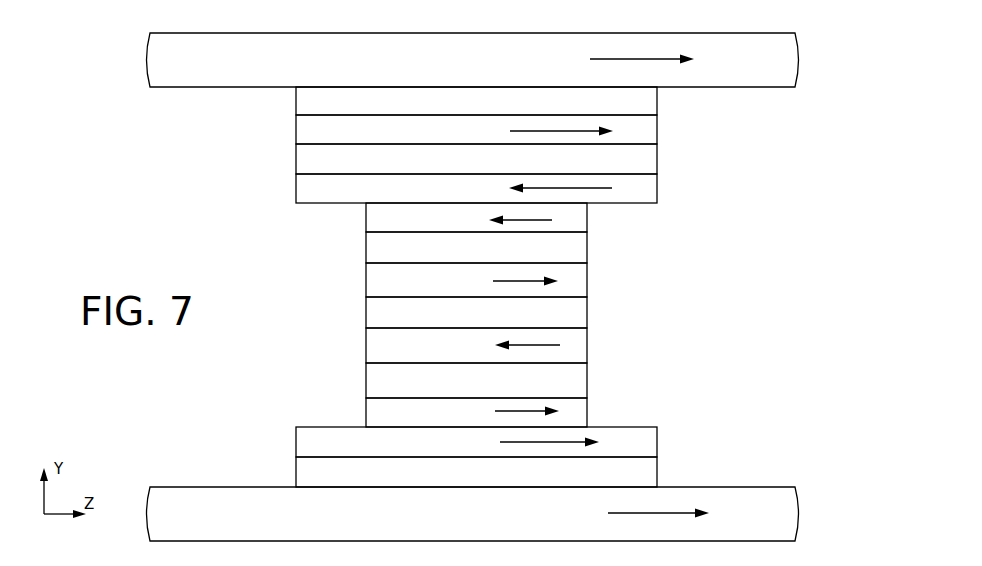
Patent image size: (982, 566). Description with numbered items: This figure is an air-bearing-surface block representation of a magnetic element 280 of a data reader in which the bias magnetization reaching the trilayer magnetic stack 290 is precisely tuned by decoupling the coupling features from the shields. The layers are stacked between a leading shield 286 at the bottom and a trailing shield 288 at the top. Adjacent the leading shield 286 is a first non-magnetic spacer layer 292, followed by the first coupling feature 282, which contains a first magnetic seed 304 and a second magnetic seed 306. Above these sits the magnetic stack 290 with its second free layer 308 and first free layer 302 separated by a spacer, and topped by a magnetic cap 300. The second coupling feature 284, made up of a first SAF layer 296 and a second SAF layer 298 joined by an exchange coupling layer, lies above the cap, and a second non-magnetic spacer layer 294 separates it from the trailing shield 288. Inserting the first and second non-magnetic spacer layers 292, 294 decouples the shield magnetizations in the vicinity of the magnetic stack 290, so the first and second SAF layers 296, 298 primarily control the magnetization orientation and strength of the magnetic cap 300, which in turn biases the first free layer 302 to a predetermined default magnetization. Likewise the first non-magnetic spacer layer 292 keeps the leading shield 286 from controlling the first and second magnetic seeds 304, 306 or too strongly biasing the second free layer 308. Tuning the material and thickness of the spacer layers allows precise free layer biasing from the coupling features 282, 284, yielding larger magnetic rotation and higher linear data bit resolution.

The magnetic element 280 is at (772, 22).
The first coupling feature 282 is at (291, 414).
The second coupling feature 284 is at (283, 185).
The leading shield 286 is at (195, 524).
The trailing shield 288 is at (195, 70).
The trilayer magnetic stack 290 is at (335, 308).
The first non-magnetic spacer layer 292 is at (660, 471).
The second non-magnetic spacer layer 294 is at (660, 100).
The first SAF layer 296 is at (660, 189).
The second SAF layer 298 is at (660, 131).
The magnetic cap 300 is at (589, 220).
The first free layer 302 is at (589, 278).
The first magnetic seed 304 is at (660, 442).
The second magnetic seed 306 is at (589, 416).
The second free layer 308 is at (589, 352).